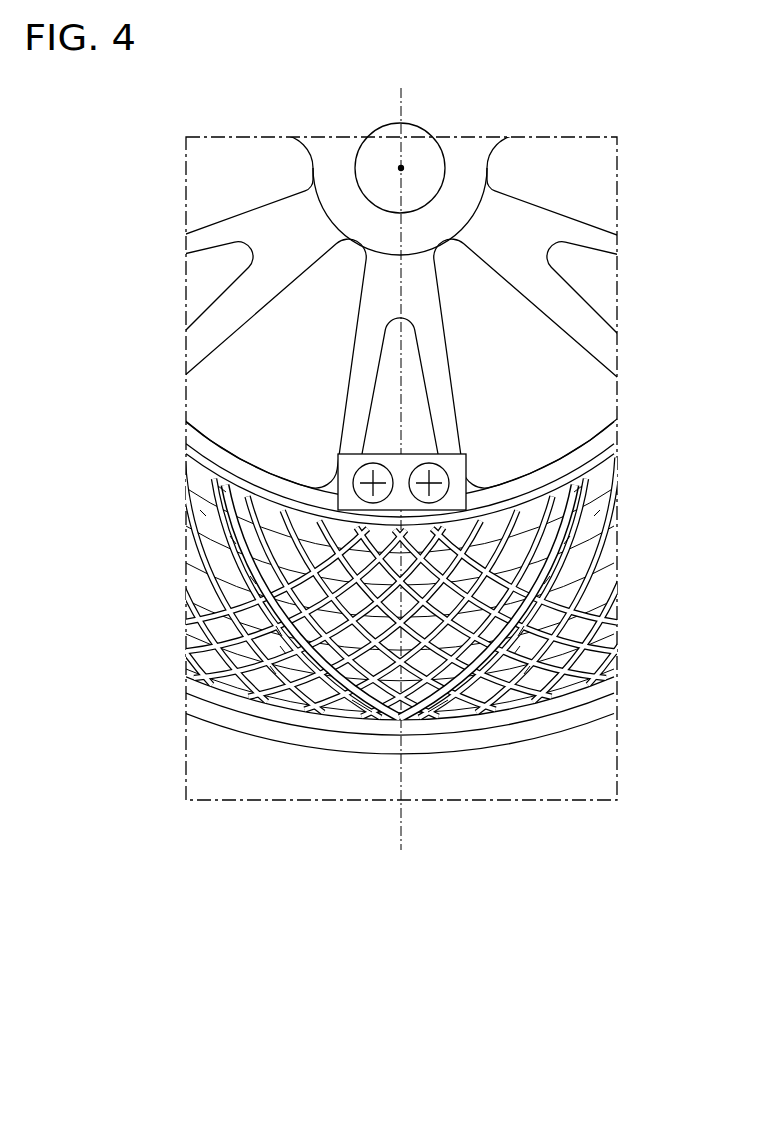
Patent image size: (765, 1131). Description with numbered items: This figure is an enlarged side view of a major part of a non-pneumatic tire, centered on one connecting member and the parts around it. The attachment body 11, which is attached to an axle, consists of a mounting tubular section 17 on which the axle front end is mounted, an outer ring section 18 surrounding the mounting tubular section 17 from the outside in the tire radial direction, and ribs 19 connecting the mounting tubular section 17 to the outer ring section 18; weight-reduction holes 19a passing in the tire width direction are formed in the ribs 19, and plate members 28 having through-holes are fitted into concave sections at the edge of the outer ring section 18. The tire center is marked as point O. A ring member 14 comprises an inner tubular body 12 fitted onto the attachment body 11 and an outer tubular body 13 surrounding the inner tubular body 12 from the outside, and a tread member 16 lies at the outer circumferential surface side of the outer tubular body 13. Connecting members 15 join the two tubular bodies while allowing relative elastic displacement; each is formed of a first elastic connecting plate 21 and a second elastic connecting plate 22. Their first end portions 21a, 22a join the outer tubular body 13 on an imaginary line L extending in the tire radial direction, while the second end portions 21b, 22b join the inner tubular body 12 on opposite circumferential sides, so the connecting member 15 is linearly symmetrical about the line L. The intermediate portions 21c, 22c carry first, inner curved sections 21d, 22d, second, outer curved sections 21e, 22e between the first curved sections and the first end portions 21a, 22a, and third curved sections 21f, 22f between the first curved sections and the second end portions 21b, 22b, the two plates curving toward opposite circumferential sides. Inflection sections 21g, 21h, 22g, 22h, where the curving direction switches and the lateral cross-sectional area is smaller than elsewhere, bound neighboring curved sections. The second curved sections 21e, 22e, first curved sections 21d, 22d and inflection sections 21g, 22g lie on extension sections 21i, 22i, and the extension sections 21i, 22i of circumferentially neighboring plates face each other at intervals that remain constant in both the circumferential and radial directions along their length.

The attachment body 11 is at (668, 60).
The inner tubular body 12 is at (197, 478).
The outer tubular body 13 is at (250, 717).
The ring member 14 is at (565, 720).
The connecting members 15 is at (570, 893).
The tread member 16 is at (557, 735).
The mounting tubular section 17 is at (487, 172).
The outer ring section 18 is at (557, 455).
The ribs 19 is at (563, 210).
The weight-reduction holes 19a is at (223, 250).
The first elastic connecting plates 21 is at (318, 672).
The first end portions 21a is at (394, 720).
The second end portions 21b is at (220, 488).
The intermediate portions 21c is at (276, 632).
The first curved sections 21d is at (253, 580).
The second curved sections 21e is at (362, 717).
The third curved sections 21f is at (203, 513).
The inflection sections 21g is at (273, 670).
The inflection sections 21h is at (233, 540).
The extension sections 21i is at (283, 650).
The second elastic connecting plates 22 is at (482, 672).
The first end portions 22a is at (406, 720).
The second end portions 22b is at (580, 488).
The intermediate portions 22c is at (530, 630).
The first curved sections 22d is at (547, 580).
The second curved sections 22e is at (438, 717).
The third curved sections 22f is at (597, 513).
The inflection sections 22g is at (527, 670).
The inflection sections 22h is at (567, 540).
The extension sections 22i is at (517, 650).
The plate members 28 is at (372, 455).
The rotation center O is at (399, 166).
The imaginary line L is at (403, 135).